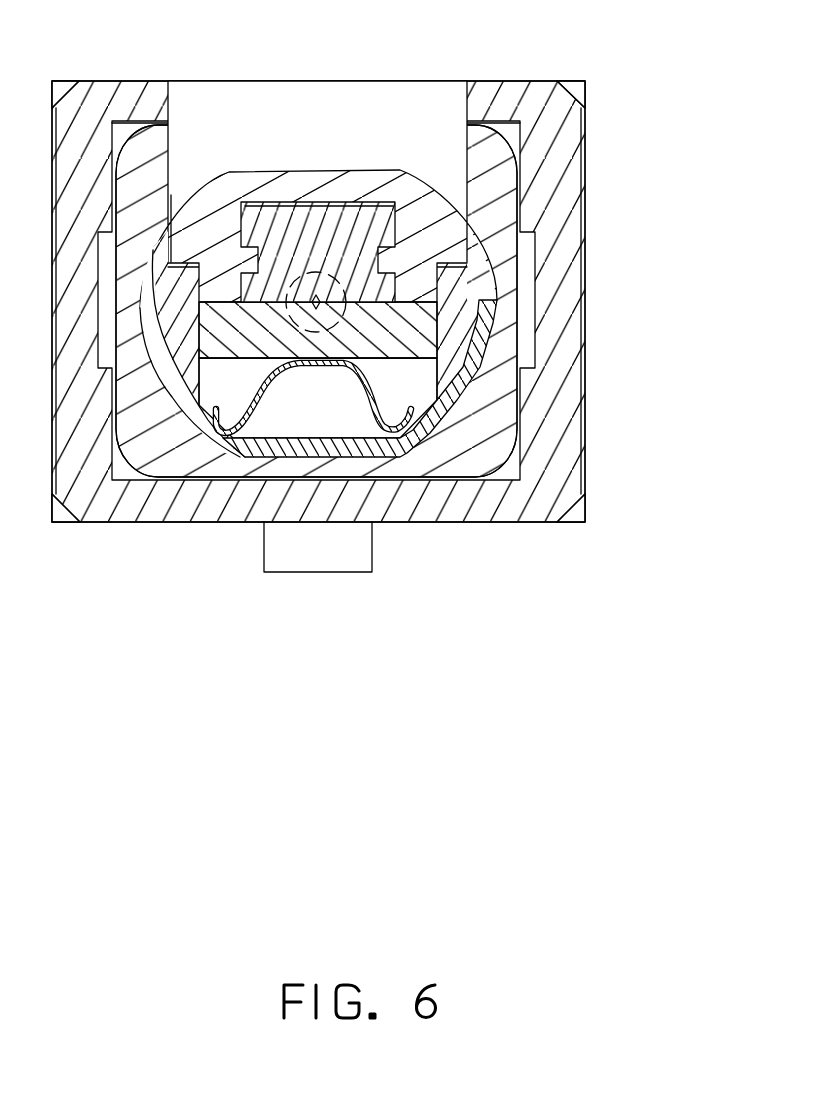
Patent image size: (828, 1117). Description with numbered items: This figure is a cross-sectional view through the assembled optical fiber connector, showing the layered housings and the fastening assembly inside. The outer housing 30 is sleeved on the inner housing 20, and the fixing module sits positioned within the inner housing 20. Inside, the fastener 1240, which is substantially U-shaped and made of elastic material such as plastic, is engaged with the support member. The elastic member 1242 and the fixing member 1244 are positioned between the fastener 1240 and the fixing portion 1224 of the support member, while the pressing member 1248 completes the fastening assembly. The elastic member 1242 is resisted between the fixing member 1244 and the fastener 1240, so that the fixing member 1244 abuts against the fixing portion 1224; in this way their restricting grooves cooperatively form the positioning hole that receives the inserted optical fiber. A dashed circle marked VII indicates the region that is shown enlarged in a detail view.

The outer housing 30 is at (540, 493).
The inner housing 20 is at (470, 435).
The pressing member 1248 is at (392, 190).
The fastener 1240 is at (383, 447).
The fixing member 1244 is at (407, 332).
The fixing portion 1224 is at (302, 247).
The elastic member 1242 is at (382, 403).
The detail view circle VII is at (346, 284).